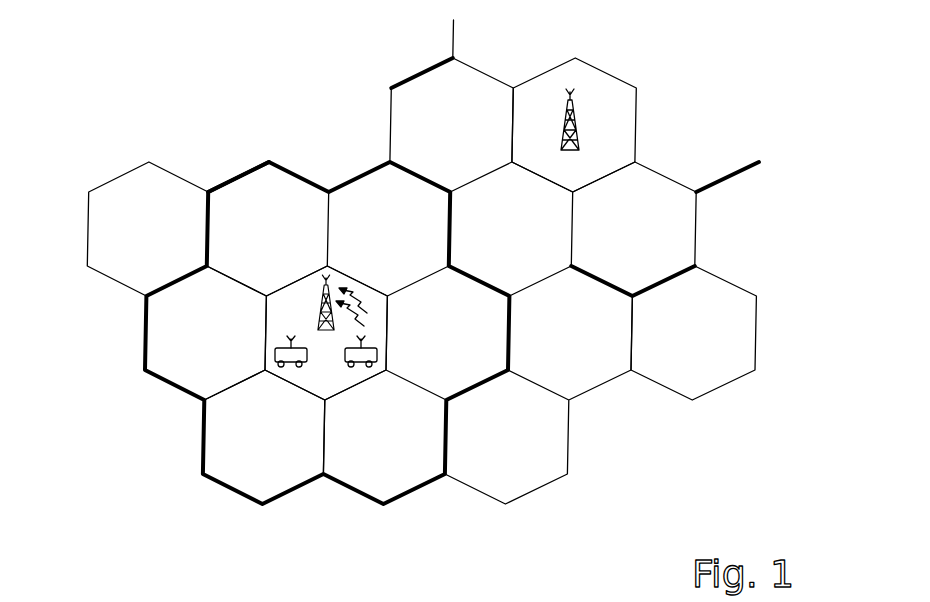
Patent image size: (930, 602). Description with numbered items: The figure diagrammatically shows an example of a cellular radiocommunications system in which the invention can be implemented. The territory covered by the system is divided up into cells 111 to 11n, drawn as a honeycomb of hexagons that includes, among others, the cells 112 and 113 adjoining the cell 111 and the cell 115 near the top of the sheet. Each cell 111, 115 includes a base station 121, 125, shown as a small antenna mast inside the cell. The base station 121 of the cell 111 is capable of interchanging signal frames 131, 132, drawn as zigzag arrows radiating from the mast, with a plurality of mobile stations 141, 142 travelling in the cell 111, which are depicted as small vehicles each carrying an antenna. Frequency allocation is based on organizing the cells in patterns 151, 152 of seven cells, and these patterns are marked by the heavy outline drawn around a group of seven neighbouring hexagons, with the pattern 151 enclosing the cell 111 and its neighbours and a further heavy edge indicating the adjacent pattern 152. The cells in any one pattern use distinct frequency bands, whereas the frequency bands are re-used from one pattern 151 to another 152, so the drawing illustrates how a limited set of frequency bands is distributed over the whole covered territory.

The cell 111 is at (320, 388).
The cell 112 is at (220, 468).
The cell 113 is at (172, 370).
The cell 115 is at (623, 125).
The cell 11n is at (673, 382).
The base station 121 is at (313, 298).
The base station 125 is at (582, 117).
The signal frame 131 is at (362, 314).
The signal frame 132 is at (358, 300).
The mobile station 141 is at (360, 370).
The mobile station 142 is at (275, 355).
The pattern 151 is at (227, 175).
The pattern 152 is at (428, 70).